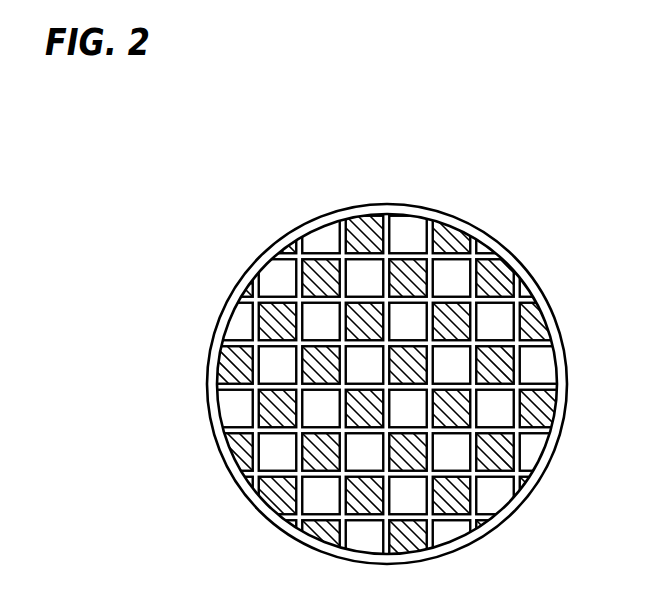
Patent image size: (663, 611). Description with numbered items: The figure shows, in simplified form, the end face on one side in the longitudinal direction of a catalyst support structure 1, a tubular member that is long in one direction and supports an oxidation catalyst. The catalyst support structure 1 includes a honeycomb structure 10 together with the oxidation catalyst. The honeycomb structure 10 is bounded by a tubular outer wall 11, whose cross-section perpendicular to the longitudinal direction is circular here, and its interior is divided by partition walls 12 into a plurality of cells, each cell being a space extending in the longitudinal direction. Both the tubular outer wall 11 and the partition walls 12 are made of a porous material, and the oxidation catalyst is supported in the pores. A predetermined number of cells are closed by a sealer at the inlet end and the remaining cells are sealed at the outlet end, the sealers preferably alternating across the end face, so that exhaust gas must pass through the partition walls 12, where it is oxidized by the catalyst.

The catalyst support structure 1 is at (258, 138).
The honeycomb structure 10 is at (441, 197).
The tubular outer wall 11 is at (492, 247).
The partition walls 12 is at (516, 296).